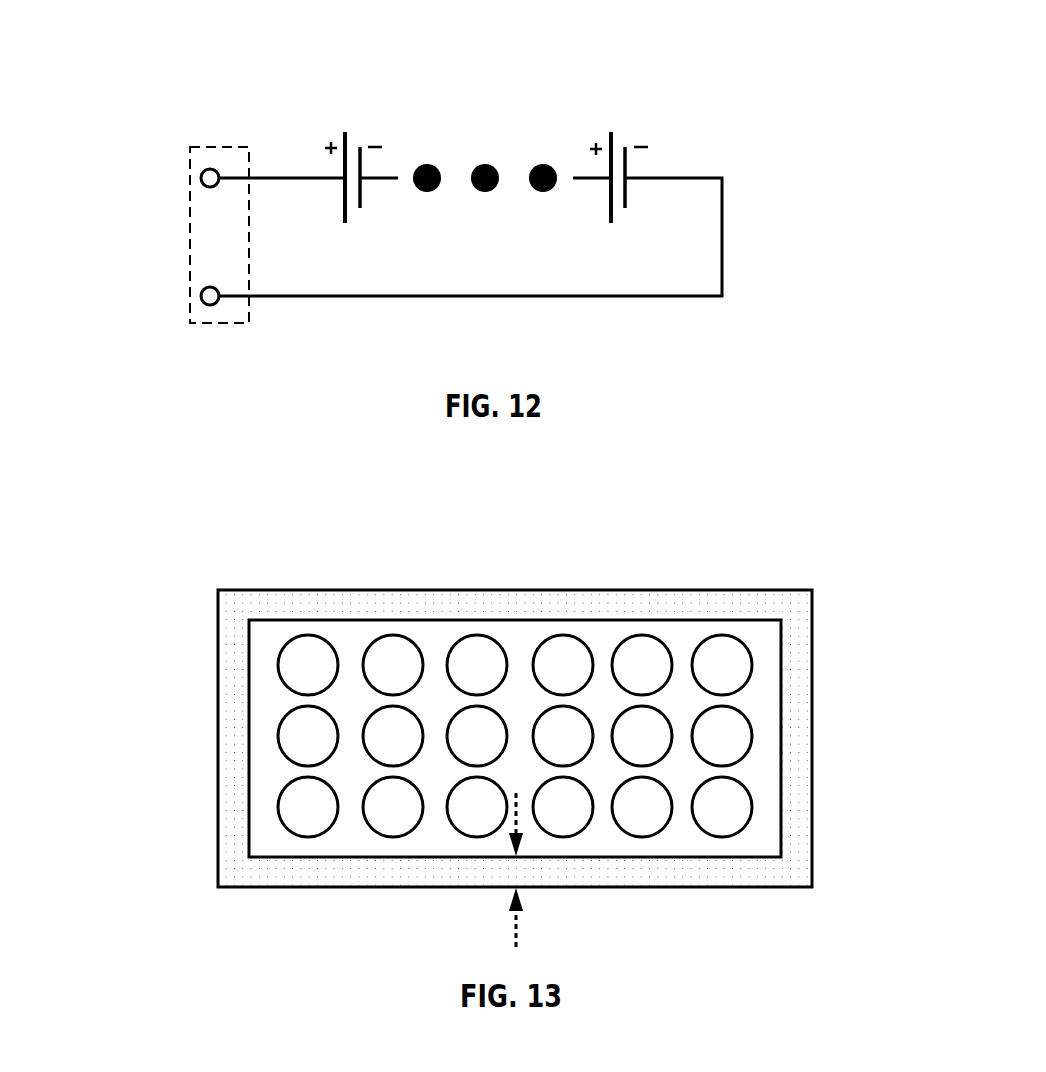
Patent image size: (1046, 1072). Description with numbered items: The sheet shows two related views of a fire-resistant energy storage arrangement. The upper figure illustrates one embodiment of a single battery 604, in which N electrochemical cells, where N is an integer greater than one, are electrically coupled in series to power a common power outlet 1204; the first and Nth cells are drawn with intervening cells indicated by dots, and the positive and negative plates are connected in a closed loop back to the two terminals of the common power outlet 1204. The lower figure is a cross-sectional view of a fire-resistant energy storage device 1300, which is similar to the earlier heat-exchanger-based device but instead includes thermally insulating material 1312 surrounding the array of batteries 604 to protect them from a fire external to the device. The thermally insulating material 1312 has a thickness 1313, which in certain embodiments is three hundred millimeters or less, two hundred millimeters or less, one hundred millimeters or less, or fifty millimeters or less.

In FIG. 12, the battery 604 is at (859, 140).
In FIG. 13, the battery 604 is at (738, 675).
In FIG. 12, the common power outlet 1204 is at (220, 145).
In FIG. 13, the fire-resistant energy storage device 1300 is at (449, 726).
In FIG. 13, the thermally insulating material 1312 is at (426, 601).
In FIG. 13, the thickness 1313 is at (518, 929).